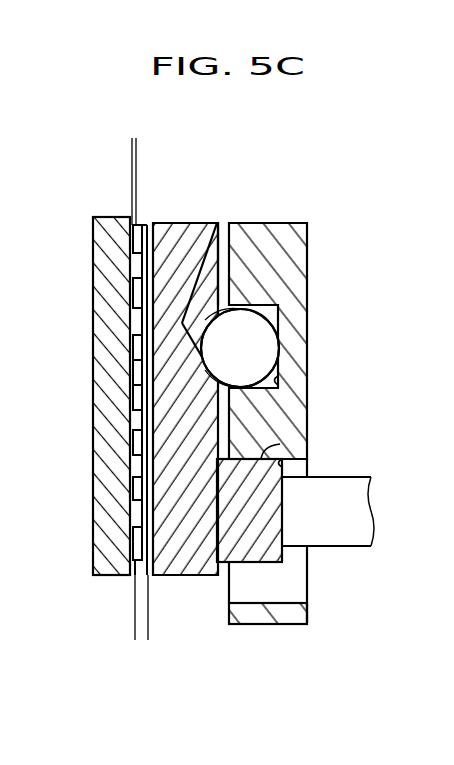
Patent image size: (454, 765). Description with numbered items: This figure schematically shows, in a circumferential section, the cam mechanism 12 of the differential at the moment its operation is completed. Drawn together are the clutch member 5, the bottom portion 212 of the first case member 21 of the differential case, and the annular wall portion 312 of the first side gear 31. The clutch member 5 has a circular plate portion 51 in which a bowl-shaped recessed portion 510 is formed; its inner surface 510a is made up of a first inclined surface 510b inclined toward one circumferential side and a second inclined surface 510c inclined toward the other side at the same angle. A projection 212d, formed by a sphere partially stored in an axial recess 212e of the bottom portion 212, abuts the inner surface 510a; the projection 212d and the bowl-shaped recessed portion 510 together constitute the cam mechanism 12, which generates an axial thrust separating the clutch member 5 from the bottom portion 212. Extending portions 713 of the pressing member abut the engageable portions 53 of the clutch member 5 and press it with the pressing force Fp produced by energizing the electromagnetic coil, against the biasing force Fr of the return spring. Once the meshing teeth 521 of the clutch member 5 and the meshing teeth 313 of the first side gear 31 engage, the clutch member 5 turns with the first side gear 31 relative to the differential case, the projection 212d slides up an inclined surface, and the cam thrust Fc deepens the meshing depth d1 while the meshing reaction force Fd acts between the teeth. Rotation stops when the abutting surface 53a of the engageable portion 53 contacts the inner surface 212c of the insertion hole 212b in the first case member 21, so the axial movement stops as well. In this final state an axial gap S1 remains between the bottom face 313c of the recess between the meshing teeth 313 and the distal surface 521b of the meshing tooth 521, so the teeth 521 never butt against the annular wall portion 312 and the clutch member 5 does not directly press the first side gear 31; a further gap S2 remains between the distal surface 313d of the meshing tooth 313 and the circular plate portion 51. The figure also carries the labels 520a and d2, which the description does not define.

The first side gear 31 is at (80, 439).
The annular wall portion 312 is at (118, 528).
The meshing teeth 313 is at (109, 389).
The bottom face 313c is at (133, 292).
The distal surface 313d is at (163, 258).
The meshing teeth 521 is at (137, 358).
The distal surface 521b is at (143, 298).
The strip surface 520a is at (71, 306).
The clutch member 5 is at (258, 424).
The circular plate portion 51 is at (187, 262).
The engageable portion 53 is at (290, 502).
The abutting surface 53a is at (262, 447).
The cam mechanism 12 is at (205, 401).
The bottom portion 212 is at (205, 401).
The insertion hole 212b is at (302, 583).
The inner surface 212c is at (283, 464).
The projection 212d is at (218, 341).
The axial recess 212e is at (279, 381).
The bowl-shaped recessed portion 510 is at (317, 300).
The inner surface 510a is at (317, 332).
The first inclined surface 510b is at (203, 367).
The second inclined surface 510c is at (215, 318).
The extending portions 713 is at (333, 527).
The first case member 21 is at (205, 438).
The depth of meshing d1 is at (165, 620).
The thickness d2 is at (157, 153).
The gap S1 is at (130, 290).
The gap S2 is at (140, 232).
The meshing reaction force Fd is at (180, 305).
The cam thrust Fc is at (226, 360).
The pressing force Fp is at (274, 510).
The biasing force Fr is at (203, 603).